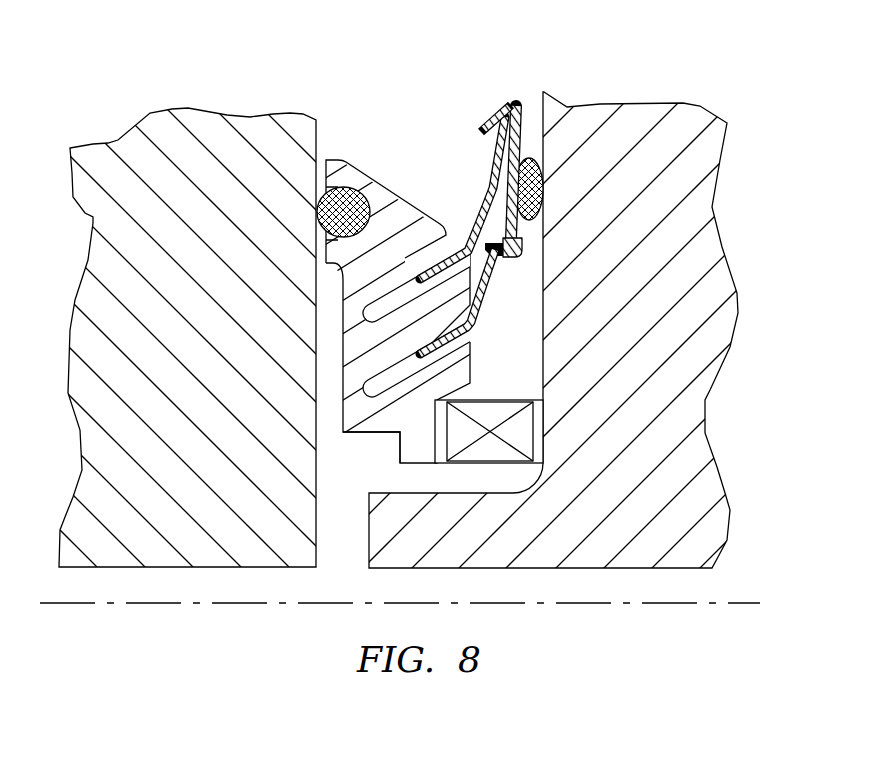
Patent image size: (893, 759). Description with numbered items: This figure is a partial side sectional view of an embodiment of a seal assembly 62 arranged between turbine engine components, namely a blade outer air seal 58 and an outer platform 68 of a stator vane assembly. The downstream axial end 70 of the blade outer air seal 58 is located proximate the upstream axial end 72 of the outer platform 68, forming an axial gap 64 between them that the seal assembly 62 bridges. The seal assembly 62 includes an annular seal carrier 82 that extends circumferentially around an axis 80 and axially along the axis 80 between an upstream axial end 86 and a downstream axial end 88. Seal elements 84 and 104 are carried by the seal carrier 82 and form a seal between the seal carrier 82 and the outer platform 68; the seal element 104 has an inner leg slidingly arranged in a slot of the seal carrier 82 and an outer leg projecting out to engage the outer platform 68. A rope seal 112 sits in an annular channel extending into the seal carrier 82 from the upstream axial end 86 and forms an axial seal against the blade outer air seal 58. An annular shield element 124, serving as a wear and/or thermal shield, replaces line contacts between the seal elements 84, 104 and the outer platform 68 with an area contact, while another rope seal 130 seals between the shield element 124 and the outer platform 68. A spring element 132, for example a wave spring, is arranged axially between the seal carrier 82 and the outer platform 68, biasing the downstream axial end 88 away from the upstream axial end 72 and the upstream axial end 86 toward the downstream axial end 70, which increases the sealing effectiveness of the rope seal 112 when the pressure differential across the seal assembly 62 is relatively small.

The blade outer air seal 58 is at (170, 312).
The seal assembly 62 is at (411, 271).
The axial gap 64 is at (512, 181).
The outer platform 68 is at (658, 326).
The downstream axial end 70 is at (318, 522).
The upstream axial end 72 is at (562, 372).
The axis 80 is at (737, 603).
The seal carrier 82 is at (358, 433).
The seal element 84 is at (488, 309).
The upstream axial end 86 is at (317, 253).
The downstream axial end 88 is at (470, 349).
The seal element 104 is at (473, 222).
The rope seal 112 is at (316, 202).
The shield element 124 is at (518, 122).
The rope seal 130 is at (547, 188).
The spring element 132 is at (538, 443).